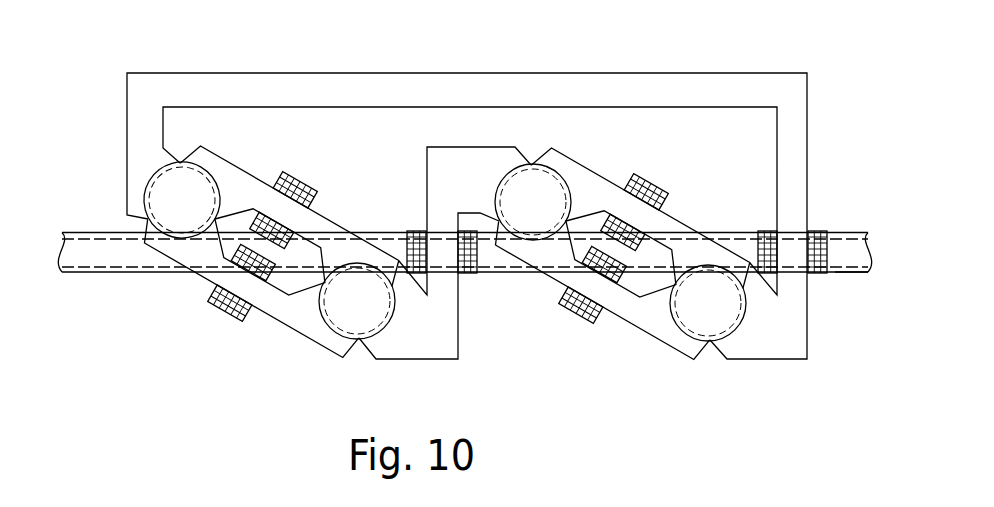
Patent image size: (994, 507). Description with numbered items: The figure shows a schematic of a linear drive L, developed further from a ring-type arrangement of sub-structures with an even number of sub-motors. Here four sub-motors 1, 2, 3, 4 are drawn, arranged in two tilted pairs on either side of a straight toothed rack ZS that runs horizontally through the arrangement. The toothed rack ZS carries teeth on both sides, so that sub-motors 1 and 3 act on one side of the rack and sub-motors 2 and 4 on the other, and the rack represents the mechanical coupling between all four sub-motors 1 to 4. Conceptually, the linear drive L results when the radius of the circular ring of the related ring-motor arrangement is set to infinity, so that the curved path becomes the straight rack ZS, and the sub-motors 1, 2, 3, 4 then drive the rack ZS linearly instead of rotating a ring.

The sub-motor 1 is at (118, 180).
The sub-motor 2 is at (338, 342).
The sub-motor 3 is at (534, 158).
The sub-motor 4 is at (729, 343).
The toothed rack ZS is at (110, 250).
The linear drive L is at (849, 281).